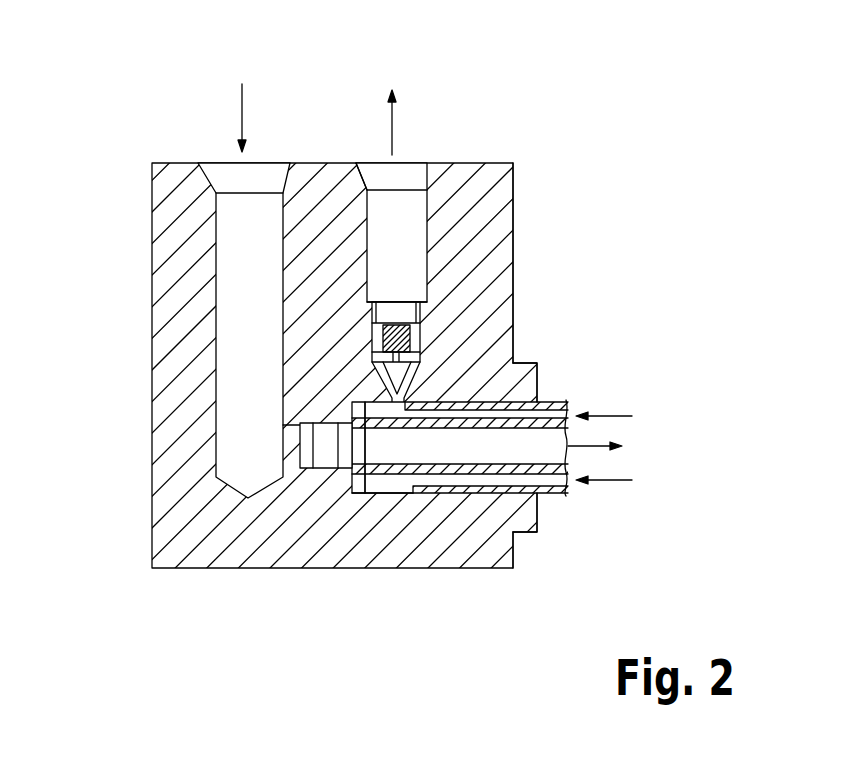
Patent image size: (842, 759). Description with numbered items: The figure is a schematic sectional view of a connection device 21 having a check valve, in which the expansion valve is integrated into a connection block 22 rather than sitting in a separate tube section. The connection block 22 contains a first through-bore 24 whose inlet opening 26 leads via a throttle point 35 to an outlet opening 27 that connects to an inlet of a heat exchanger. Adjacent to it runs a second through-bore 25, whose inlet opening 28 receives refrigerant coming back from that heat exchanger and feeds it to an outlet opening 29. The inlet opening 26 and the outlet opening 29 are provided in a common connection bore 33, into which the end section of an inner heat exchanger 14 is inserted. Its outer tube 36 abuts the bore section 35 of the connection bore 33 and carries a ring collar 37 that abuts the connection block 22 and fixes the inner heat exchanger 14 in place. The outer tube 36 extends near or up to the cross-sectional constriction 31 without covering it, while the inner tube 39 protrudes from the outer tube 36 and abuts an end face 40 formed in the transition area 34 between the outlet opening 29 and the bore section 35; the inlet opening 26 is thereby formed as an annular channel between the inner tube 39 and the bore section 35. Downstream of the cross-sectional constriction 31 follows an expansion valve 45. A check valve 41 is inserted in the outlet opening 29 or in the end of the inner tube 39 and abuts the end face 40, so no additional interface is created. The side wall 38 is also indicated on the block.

The inner heat exchanger 14 is at (580, 376).
The connection device 21 is at (562, 219).
The connection block 22 is at (172, 232).
The first through-bore 24 is at (455, 150).
The second through-bore 25 is at (265, 132).
The inlet opening 26 is at (355, 400).
The outlet opening 27 is at (427, 165).
The inlet opening 28 is at (200, 170).
The outlet opening 29 is at (292, 470).
The cross-sectional constriction 31 is at (418, 392).
The common connection bore 33 is at (443, 524).
The transition area 34 is at (336, 499).
The throttle point 35 is at (470, 403).
The outer tube 36 is at (470, 495).
The ring collar 37 is at (527, 535).
The side wall 38 is at (517, 180).
The inner tube 39 is at (388, 480).
The end face 40 is at (367, 480).
The check valve 41 is at (305, 497).
The expansion valve 45 is at (396, 286).